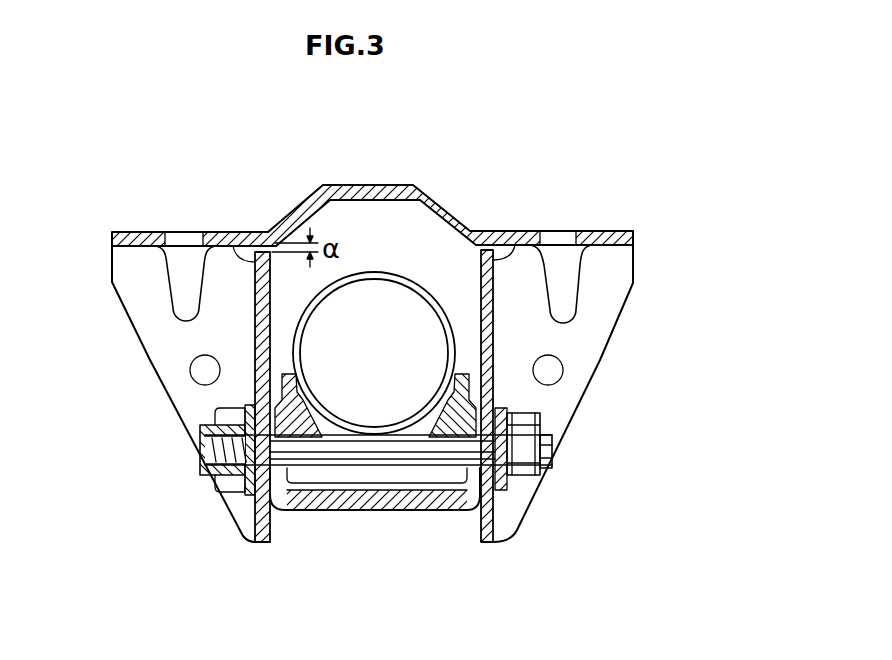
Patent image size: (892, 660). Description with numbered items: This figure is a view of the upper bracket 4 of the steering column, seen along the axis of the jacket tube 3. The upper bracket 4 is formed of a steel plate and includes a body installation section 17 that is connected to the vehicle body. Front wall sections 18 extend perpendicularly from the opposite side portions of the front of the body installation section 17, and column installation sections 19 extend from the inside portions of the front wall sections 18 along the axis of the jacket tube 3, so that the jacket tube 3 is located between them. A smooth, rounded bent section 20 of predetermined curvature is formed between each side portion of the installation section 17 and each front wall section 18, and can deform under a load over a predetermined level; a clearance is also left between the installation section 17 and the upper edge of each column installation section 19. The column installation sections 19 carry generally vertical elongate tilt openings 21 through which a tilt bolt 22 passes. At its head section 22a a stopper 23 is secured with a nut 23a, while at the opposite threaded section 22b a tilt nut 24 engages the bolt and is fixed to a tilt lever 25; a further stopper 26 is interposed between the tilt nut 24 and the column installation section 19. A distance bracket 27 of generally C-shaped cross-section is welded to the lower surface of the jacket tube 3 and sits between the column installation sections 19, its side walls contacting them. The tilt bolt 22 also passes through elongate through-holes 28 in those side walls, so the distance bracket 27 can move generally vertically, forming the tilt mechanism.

The jacket tube 3 is at (377, 272).
The upper bracket 4 is at (650, 238).
The body installation section 17 is at (443, 210).
The front wall section 18 is at (575, 385).
The column installation section 19 is at (255, 333).
The bent section 20 is at (227, 263).
The tilt opening 21 is at (248, 537).
The tilt bolt 22 is at (427, 447).
The head section 22a is at (558, 447).
The threaded section 22b is at (203, 477).
The stopper 23 is at (513, 482).
The nut 23a is at (543, 423).
The tilt nut 24 is at (195, 430).
The tilt lever 25 is at (217, 483).
The stopper 26 is at (253, 498).
The distance bracket 27 is at (372, 512).
The elongate through-hole 28 is at (312, 512).